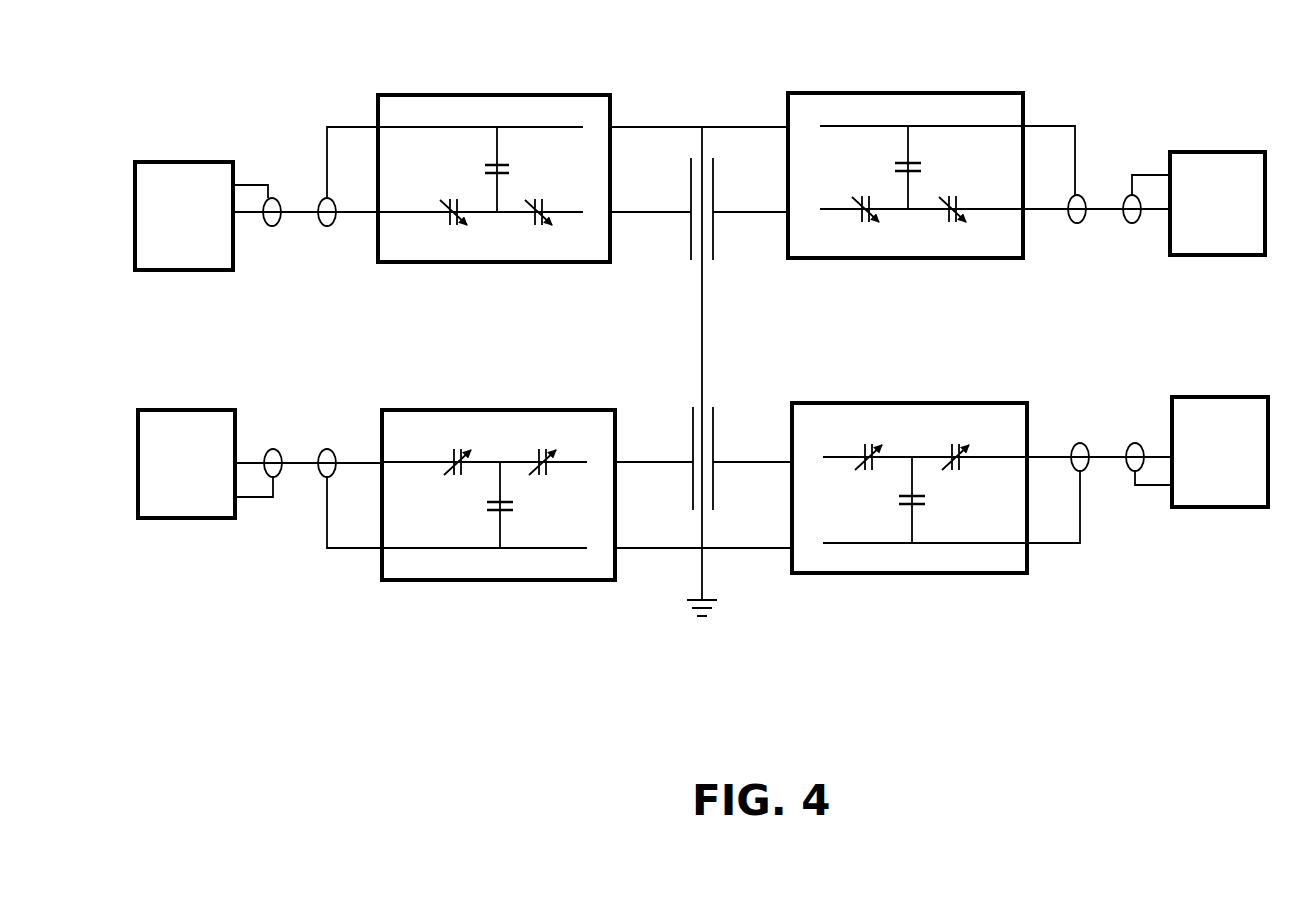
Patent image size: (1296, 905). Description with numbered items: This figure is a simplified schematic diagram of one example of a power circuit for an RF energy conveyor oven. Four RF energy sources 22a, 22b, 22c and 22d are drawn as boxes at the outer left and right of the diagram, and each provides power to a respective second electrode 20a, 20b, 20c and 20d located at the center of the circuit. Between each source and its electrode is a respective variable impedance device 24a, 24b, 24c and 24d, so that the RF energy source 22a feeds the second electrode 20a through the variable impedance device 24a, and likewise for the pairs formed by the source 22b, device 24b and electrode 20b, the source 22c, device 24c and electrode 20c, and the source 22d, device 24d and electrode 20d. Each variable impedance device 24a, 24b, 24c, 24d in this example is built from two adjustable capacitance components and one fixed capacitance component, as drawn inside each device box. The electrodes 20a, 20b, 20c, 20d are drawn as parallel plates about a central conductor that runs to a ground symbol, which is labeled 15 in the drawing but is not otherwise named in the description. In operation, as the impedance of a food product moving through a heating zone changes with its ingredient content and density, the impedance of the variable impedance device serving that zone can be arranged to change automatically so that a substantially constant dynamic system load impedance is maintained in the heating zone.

The ground / dielectric substrate 15 is at (706, 522).
The second electrode 20a is at (693, 497).
The second electrode 20b is at (713, 488).
The second electrode 20c is at (691, 175).
The second electrode 20d is at (713, 175).
The RF energy source 22a is at (209, 474).
The RF energy source 22b is at (1243, 462).
The RF energy source 22c is at (207, 226).
The RF energy source 22d is at (1240, 216).
The variable impedance device 24a is at (498, 427).
The variable impedance device 24b is at (905, 425).
The variable impedance device 24c is at (447, 107).
The variable impedance device 24d is at (873, 106).